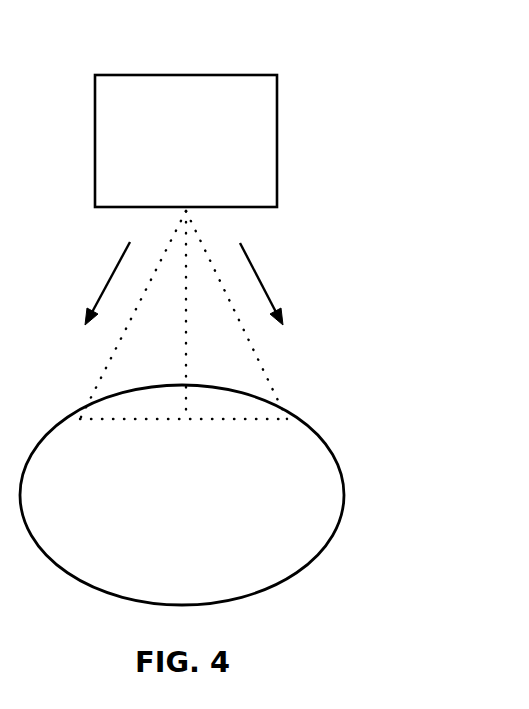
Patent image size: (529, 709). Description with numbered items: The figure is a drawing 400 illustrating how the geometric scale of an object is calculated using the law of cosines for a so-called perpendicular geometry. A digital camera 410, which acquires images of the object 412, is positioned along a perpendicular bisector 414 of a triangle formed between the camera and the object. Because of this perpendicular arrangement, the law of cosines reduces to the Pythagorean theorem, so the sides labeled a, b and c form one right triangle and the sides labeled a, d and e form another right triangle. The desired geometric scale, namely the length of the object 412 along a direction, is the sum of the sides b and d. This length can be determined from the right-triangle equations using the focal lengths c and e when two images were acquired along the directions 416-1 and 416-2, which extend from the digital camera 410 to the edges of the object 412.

The drawing 400 is at (340, 47).
The digital camera 410 is at (186, 141).
The object 412 is at (182, 495).
The perpendicular bisector 414 is at (186, 268).
The direction 416-1 is at (98, 295).
The direction 416-2 is at (267, 293).